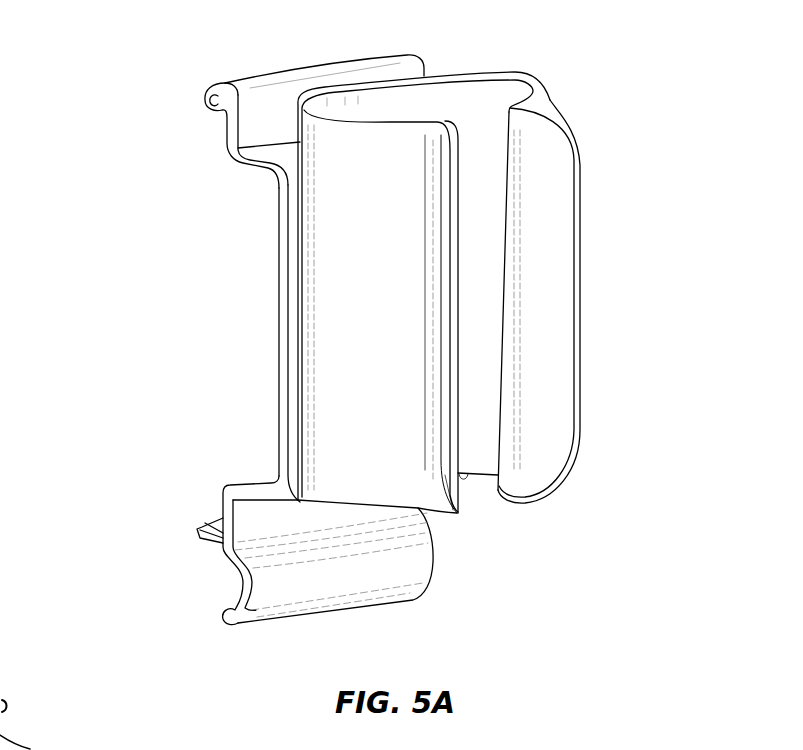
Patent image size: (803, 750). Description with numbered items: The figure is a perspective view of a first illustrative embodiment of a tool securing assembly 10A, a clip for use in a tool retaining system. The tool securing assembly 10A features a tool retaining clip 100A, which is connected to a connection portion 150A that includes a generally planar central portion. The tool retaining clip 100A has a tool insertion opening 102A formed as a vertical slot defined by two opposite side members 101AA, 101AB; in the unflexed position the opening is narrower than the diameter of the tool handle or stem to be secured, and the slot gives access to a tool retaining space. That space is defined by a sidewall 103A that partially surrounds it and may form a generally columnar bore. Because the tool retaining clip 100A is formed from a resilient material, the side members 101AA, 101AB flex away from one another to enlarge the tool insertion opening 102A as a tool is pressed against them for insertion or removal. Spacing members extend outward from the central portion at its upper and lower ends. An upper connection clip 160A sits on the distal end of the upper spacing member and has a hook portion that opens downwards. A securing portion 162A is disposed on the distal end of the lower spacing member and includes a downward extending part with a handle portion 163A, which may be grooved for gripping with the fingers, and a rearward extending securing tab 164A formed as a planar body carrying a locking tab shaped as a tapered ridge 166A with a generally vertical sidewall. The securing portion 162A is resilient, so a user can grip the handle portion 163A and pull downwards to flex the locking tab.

The tool securing assembly 10A is at (260, 245).
The tool retaining clip 100A is at (343, 373).
The side member 101AA is at (457, 513).
The side member 101AB is at (547, 452).
The tool insertion opening 102A is at (478, 392).
The sidewall 103A is at (393, 470).
The connection portion 150A is at (280, 319).
The upper connection clip 160A is at (210, 90).
The securing portion 162A is at (226, 580).
The handle portion 163A is at (302, 585).
The securing tab 164A is at (198, 538).
The tapered ridge 166A is at (198, 525).